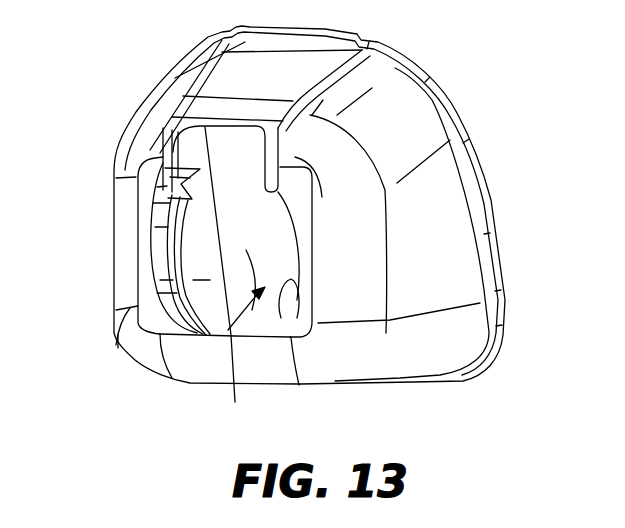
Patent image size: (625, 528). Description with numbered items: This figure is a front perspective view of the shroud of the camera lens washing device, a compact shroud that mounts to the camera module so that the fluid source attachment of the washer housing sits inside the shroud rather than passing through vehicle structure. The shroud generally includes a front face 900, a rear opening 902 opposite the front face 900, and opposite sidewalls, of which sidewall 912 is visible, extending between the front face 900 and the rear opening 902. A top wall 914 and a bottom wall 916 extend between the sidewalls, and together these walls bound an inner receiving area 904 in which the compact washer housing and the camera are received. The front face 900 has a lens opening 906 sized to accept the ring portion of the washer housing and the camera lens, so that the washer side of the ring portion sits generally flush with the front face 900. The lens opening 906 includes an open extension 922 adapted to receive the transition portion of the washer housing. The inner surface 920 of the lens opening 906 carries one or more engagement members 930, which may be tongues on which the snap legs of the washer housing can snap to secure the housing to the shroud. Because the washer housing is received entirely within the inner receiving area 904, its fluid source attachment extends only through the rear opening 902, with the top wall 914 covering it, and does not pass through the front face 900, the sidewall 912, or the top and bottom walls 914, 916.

The front face 900 is at (118, 350).
The rear opening 902 is at (486, 198).
The inner receiving area 904 is at (235, 279).
The lens opening 906 is at (296, 322).
The sidewall 912 is at (459, 254).
The top wall 914 is at (223, 72).
The bottom wall 916 is at (181, 383).
The inner surface 920 is at (157, 260).
The open extension 922 is at (184, 141).
The engagement member 930 is at (184, 230).